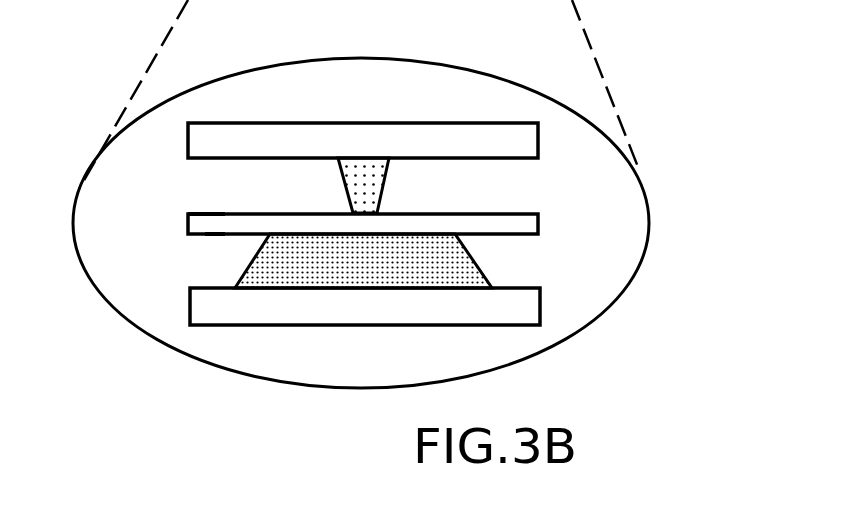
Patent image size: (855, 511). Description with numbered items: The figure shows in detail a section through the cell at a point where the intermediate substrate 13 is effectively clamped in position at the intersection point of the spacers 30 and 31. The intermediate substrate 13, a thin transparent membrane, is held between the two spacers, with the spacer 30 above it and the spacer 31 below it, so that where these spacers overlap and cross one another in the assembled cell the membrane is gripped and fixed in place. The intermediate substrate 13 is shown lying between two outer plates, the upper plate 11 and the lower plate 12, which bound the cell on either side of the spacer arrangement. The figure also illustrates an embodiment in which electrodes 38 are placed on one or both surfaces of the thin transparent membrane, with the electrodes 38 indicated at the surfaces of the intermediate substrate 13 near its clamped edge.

The upper substrate plate 11 is at (538, 140).
The lower substrate plate 12 is at (540, 303).
The intermediate substrate 13 is at (538, 221).
The spacer 30 is at (386, 190).
The spacer 31 is at (478, 257).
The electrodes 38 is at (223, 213).